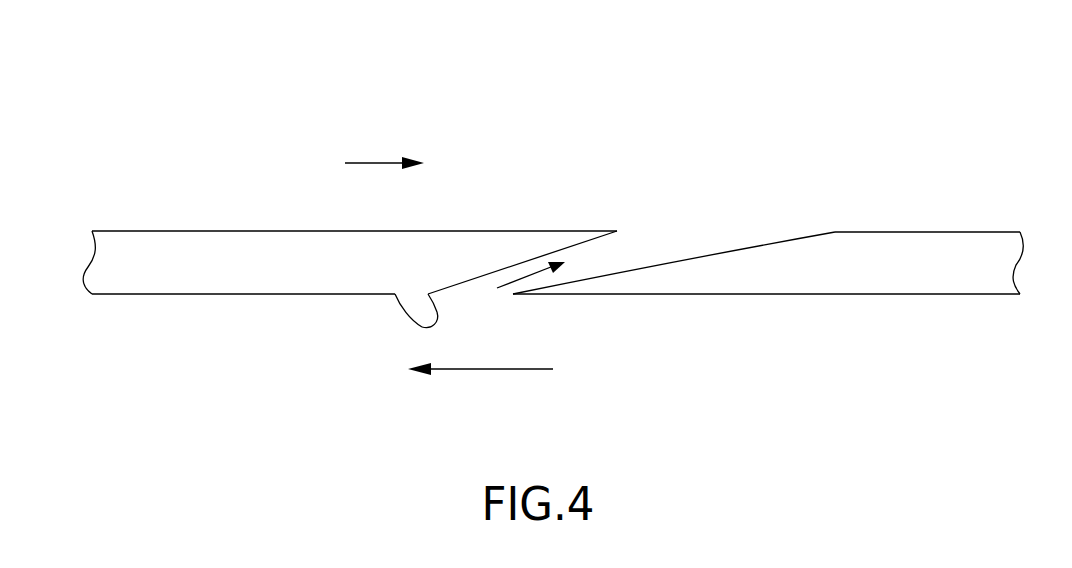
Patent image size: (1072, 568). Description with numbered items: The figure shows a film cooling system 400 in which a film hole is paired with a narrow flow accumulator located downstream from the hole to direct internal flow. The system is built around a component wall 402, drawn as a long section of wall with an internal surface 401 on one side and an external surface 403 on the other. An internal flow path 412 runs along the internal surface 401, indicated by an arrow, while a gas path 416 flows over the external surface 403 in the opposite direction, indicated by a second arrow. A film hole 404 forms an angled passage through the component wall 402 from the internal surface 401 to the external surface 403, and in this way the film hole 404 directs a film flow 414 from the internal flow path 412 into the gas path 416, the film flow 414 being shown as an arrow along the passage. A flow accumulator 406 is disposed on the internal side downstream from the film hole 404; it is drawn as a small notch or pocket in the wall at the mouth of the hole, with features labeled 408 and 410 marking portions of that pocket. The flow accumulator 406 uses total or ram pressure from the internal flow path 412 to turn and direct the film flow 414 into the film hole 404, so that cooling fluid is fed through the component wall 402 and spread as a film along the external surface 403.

The film cooling system 400 is at (227, 87).
The internal surface 401 is at (228, 297).
The component wall 402 is at (138, 278).
The external surface 403 is at (187, 230).
The film hole 404 is at (508, 276).
The flow accumulator 406 is at (417, 308).
The notch second side 408 is at (438, 318).
The notch bottom 410 is at (405, 313).
The internal flow path 412 is at (538, 368).
The film flow 414 is at (523, 275).
The gas path 416 is at (375, 163).